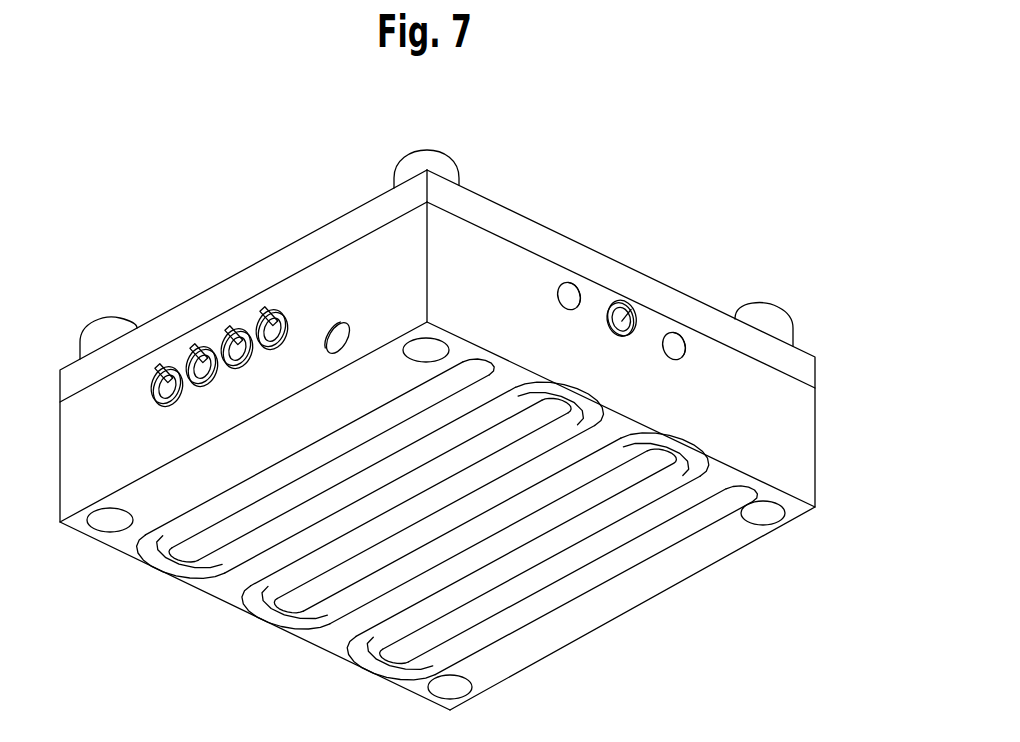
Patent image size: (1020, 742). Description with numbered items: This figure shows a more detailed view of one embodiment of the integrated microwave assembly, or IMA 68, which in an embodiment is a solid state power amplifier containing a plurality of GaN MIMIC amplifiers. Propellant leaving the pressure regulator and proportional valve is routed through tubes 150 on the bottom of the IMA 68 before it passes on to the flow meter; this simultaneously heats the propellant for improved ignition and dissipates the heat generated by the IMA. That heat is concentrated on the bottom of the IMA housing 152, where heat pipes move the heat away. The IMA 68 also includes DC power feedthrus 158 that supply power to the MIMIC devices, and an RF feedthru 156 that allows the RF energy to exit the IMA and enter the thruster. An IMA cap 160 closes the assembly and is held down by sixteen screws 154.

The IMA 68 is at (650, 178).
The tubes 150 is at (628, 568).
The IMA housing 152 is at (812, 472).
The screws 154 is at (781, 323).
The RF feedthru 156 is at (624, 300).
The DC power feedthrus 158 is at (165, 365).
The IMA cap 160 is at (387, 169).